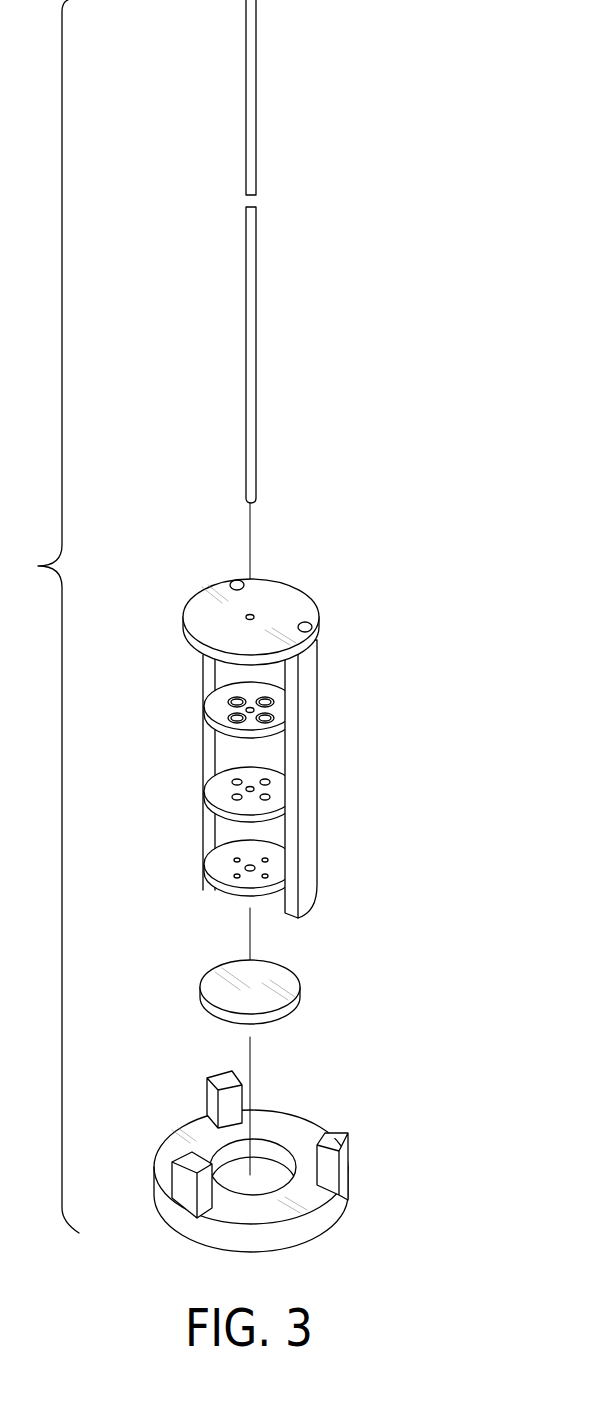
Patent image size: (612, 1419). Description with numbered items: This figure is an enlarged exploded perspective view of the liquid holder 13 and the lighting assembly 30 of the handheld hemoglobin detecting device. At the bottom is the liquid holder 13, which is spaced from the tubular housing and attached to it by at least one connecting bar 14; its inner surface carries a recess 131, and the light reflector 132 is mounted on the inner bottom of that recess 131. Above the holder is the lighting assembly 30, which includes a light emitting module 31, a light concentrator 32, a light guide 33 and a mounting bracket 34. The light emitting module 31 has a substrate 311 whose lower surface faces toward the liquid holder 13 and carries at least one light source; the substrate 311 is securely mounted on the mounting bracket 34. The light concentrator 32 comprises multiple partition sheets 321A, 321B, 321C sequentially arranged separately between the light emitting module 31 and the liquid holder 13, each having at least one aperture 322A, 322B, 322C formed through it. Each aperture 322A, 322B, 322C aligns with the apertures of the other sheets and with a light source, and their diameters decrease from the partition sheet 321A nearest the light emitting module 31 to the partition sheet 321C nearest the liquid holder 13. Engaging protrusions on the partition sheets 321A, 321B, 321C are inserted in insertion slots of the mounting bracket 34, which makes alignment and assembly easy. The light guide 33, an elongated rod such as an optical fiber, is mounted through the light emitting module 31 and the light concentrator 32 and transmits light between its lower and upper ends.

The liquid holder 13 is at (283, 1161).
The recess 131 is at (265, 1176).
The light reflector 132 is at (292, 978).
The connecting bar 14 is at (346, 1152).
The lighting assembly 30 is at (373, 530).
The light emitting module 31 is at (238, 587).
The substrate 311 is at (278, 592).
The light concentrator 32 is at (263, 750).
The partition sheet 321A is at (254, 701).
The partition sheet 321B is at (254, 779).
The partition sheet 321C is at (254, 856).
The aperture 322A is at (268, 718).
The aperture 322B is at (266, 800).
The aperture 322C is at (264, 876).
The light guide 33 is at (257, 52).
The mounting bracket 34 is at (318, 885).